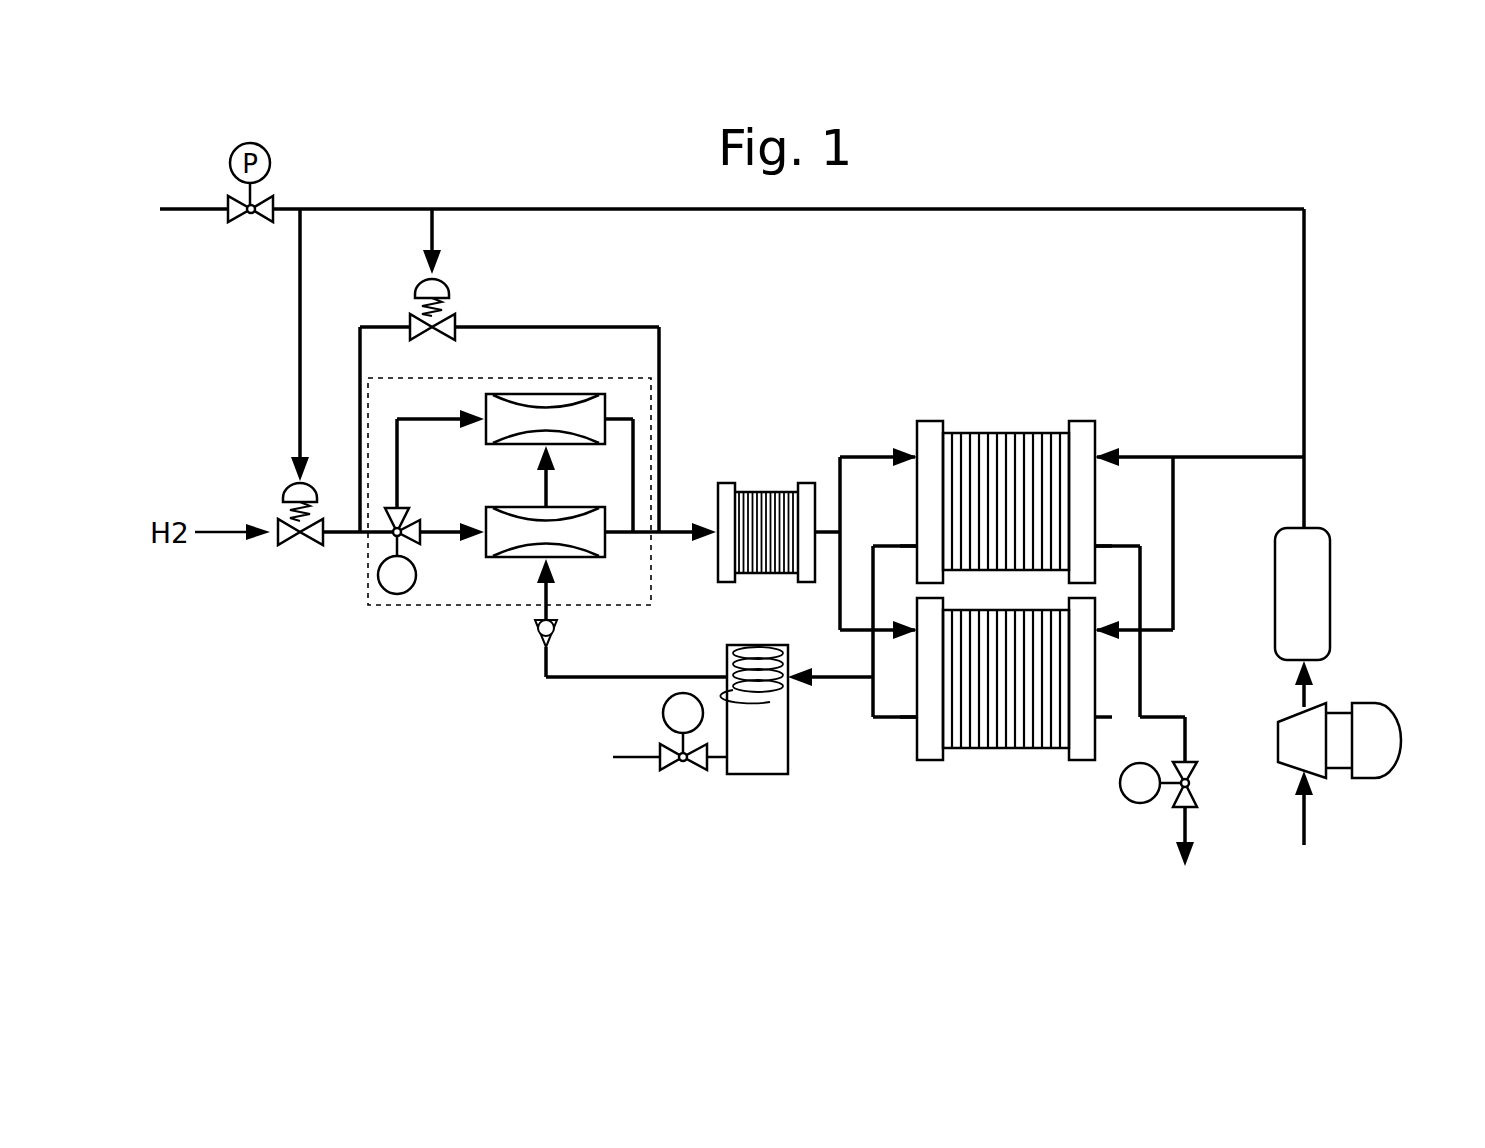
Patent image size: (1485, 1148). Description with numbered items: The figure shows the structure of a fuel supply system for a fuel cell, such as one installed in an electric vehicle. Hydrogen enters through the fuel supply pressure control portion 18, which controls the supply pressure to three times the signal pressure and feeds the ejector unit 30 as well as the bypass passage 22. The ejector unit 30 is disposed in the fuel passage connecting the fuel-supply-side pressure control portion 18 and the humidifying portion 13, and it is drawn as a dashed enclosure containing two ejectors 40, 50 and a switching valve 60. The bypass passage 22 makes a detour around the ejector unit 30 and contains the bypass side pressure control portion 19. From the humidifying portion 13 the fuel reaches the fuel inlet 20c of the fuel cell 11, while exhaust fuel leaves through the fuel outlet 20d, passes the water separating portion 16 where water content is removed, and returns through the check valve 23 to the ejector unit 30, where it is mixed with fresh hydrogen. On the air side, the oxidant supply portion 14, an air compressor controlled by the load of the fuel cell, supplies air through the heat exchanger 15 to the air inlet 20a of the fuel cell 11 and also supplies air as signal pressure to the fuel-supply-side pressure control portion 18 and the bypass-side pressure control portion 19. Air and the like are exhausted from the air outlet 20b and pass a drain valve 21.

The fuel cell 11 is at (1010, 432).
The humidifying portion 13 is at (762, 490).
The oxidant supply portion 14 is at (1380, 703).
The heat exchanger 15 is at (1332, 578).
The water separating portion 16 is at (755, 775).
The fuel supply pressure control portion 18 is at (286, 486).
The bypass side pressure control portion 19 is at (449, 286).
The air inlet 20a is at (1097, 455).
The air outlet 20b is at (1097, 543).
The fuel inlet 20c is at (915, 455).
The fuel outlet 20d is at (915, 543).
The drain valve 21 is at (1145, 804).
The bypass passage 22 is at (580, 325).
The check valve 23 is at (532, 640).
The ejector unit 30 is at (456, 610).
The first ejector 40 is at (570, 557).
The second ejector 50 is at (486, 430).
The switching valve 60 is at (417, 579).